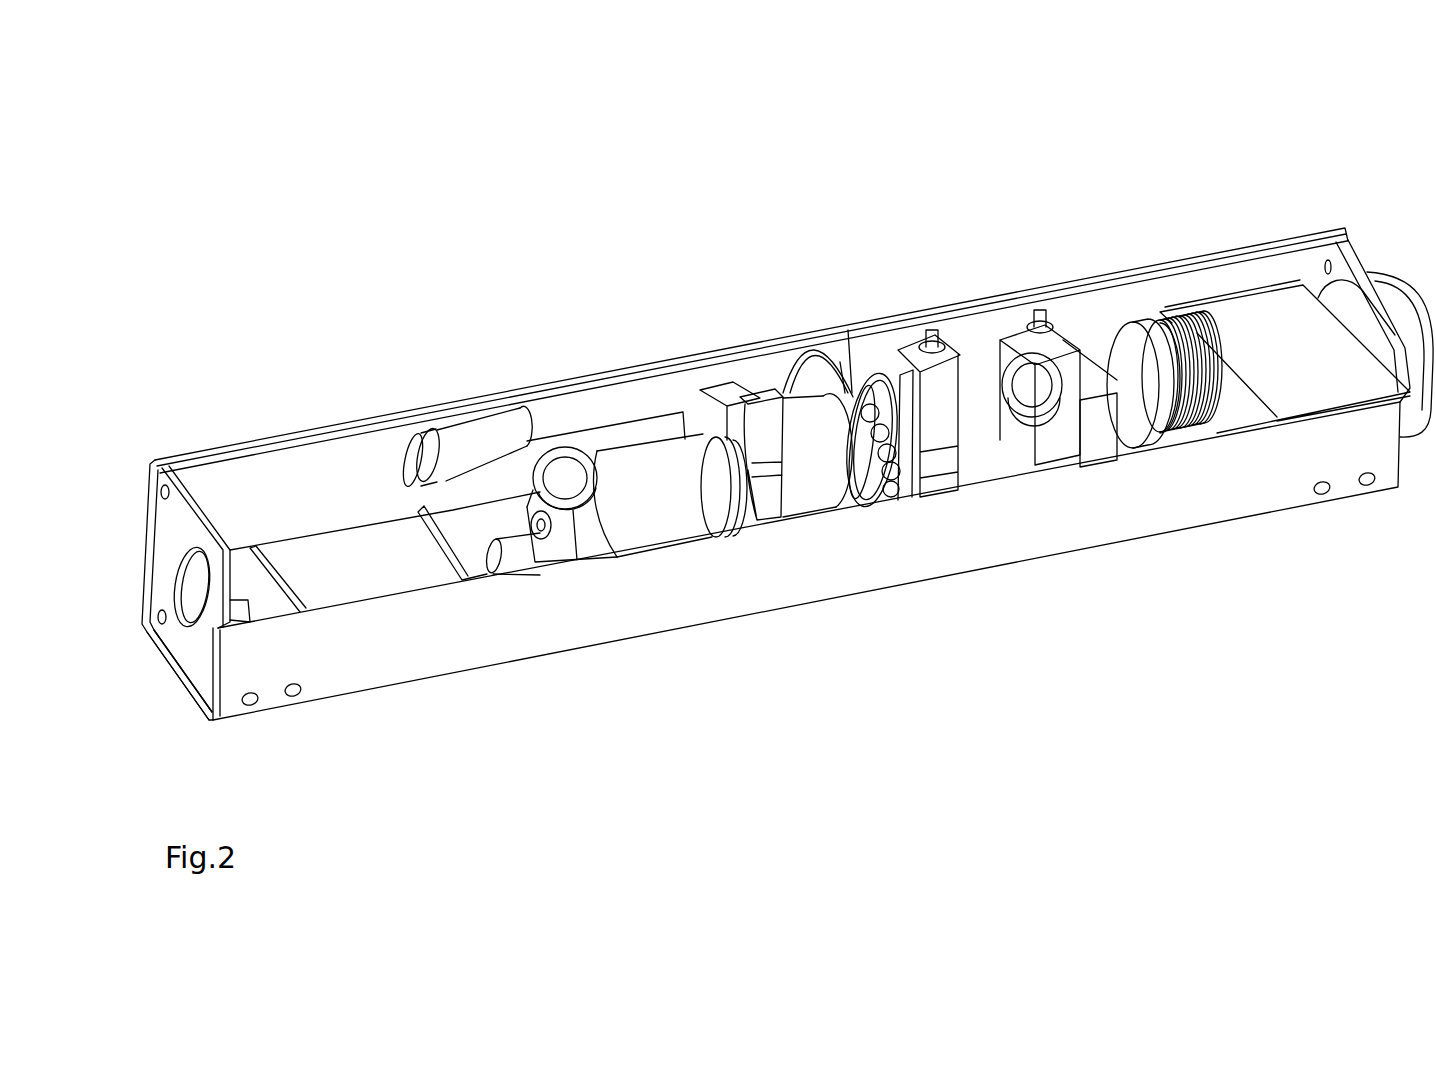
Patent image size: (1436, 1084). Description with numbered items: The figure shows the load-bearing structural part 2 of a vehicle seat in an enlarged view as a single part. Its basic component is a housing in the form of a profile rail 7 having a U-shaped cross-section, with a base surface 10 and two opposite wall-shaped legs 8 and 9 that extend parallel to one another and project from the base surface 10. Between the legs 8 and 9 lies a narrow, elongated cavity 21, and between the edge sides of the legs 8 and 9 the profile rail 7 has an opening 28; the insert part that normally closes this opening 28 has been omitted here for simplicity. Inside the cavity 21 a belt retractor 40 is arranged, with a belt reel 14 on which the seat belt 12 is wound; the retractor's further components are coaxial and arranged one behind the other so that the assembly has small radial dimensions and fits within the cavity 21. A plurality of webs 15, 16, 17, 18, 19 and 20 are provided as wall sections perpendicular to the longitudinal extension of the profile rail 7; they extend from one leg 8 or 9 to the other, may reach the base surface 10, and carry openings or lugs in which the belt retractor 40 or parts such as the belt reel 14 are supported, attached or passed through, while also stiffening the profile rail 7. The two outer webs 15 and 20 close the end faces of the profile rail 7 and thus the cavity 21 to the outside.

The load-bearing structural part 2 is at (605, 340).
The profile rail 7 is at (276, 466).
The leg 8 is at (314, 458).
The leg 9 is at (432, 640).
The base surface 10 is at (172, 672).
The seat belt 12 is at (1313, 338).
The belt reel 14 is at (1147, 335).
The web 15 is at (1358, 287).
The web 16 is at (1020, 323).
The web 17 is at (918, 348).
The web 18 is at (878, 343).
The web 19 is at (760, 497).
The web 20 is at (203, 645).
The cavity 21 is at (462, 525).
The opening 28 is at (1102, 447).
The belt retractor 40 is at (1187, 290).